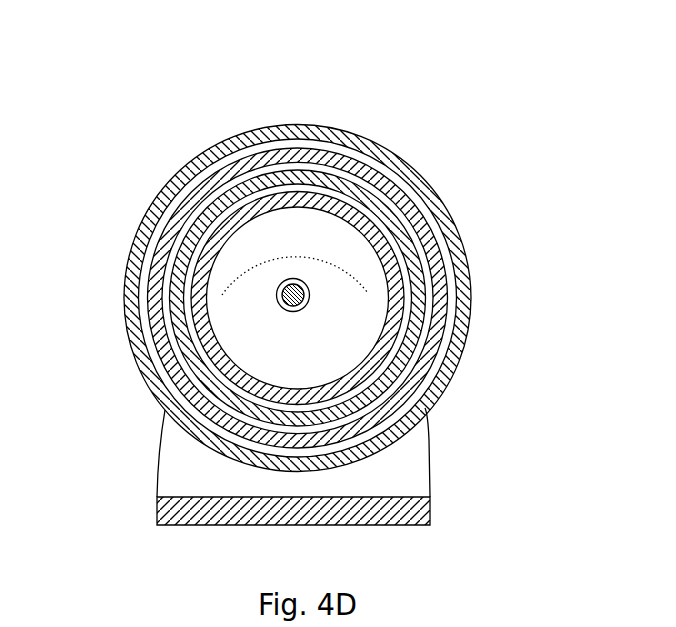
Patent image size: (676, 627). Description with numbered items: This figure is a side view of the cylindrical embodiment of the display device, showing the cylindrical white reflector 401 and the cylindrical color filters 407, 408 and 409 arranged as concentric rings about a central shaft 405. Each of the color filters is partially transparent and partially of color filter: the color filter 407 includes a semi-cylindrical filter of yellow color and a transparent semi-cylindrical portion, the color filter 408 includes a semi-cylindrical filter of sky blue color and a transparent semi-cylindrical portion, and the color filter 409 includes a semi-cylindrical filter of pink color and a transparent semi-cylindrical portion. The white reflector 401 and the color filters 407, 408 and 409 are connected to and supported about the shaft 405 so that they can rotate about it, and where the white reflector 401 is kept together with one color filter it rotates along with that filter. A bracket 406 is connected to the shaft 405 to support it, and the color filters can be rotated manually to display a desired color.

The white reflector 401 is at (295, 254).
The shaft 405 is at (310, 296).
The bracket 406 is at (417, 485).
The color filter 407 is at (237, 190).
The color filter 408 is at (338, 128).
The color filter 409 is at (442, 192).